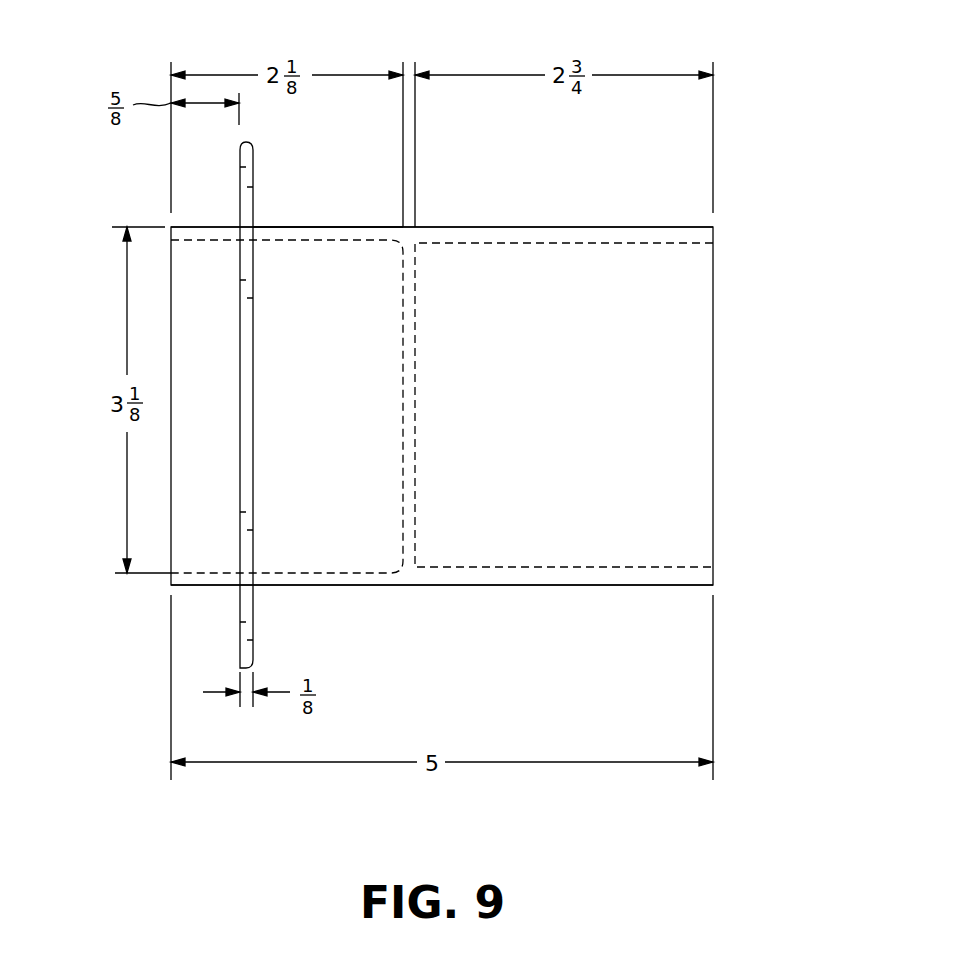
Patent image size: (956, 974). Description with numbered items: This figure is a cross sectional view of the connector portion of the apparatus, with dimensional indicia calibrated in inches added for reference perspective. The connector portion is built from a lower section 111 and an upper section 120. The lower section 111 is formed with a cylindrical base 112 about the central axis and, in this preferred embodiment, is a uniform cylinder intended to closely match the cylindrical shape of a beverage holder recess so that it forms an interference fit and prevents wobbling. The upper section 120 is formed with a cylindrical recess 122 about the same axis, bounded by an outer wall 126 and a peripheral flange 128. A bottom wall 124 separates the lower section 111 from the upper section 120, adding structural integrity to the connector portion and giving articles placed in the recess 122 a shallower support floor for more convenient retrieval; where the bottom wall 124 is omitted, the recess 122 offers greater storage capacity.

The lower section 111 is at (713, 361).
The cylindrical base 112 is at (578, 227).
The upper section 120 is at (172, 585).
The cylindrical recess 122 is at (290, 241).
The bottom wall 124 is at (402, 390).
The outer wall 126 is at (297, 227).
The peripheral flange 128 is at (239, 206).